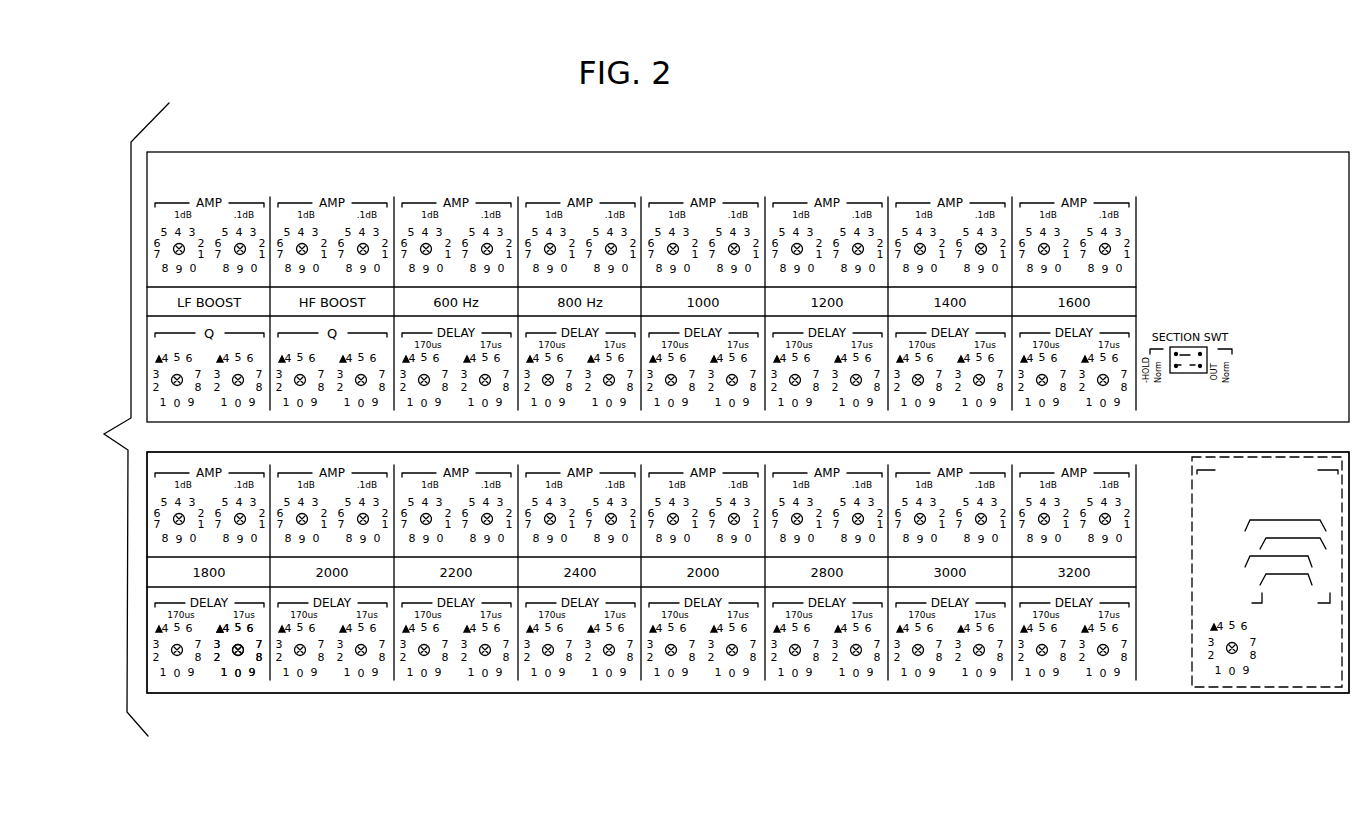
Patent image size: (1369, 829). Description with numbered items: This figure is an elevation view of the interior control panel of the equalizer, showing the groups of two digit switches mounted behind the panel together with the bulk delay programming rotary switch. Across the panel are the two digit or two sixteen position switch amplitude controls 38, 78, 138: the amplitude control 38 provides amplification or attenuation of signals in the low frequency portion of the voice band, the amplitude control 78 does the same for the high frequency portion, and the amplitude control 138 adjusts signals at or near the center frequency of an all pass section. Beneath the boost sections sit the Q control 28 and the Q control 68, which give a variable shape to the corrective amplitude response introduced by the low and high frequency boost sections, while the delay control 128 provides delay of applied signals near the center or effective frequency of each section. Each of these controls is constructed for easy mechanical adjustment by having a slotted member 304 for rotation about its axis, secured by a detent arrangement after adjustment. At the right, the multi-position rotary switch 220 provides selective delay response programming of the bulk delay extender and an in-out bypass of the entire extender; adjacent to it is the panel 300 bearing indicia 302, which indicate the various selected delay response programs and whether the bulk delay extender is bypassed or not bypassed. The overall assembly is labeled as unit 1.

The equalizer front panel 1 is at (569, 419).
The amplitude control 38 is at (233, 210).
The amplitude control 78 is at (362, 208).
The amplitude control 138 is at (465, 215).
The Q control 28 is at (208, 402).
The Q control 68 is at (340, 402).
The delay control 128 is at (532, 405).
The slotted member 304 is at (238, 657).
The panel 300 is at (1363, 459).
The indicia 302 is at (1275, 678).
The multi-position rotary switch 220 is at (1232, 650).